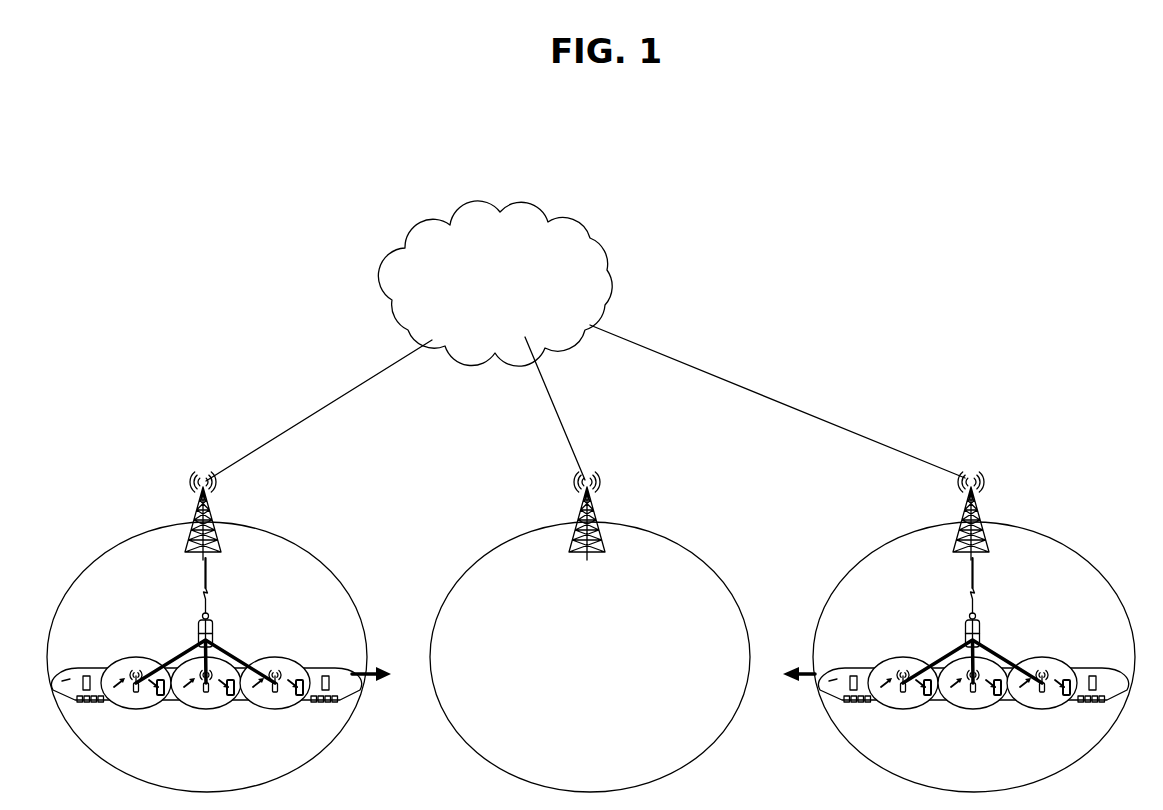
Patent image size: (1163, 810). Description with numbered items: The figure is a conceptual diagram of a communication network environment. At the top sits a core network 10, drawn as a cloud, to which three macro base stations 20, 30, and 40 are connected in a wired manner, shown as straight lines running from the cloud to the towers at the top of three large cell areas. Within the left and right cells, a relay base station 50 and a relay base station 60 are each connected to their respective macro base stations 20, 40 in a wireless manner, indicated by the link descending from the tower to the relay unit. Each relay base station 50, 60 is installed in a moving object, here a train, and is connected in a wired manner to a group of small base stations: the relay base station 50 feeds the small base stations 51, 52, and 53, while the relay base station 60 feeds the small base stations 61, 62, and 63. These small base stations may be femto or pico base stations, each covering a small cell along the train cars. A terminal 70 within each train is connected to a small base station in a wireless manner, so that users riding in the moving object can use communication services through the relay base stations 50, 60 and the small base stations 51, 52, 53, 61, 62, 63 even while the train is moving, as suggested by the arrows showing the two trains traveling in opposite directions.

The core network 10 is at (497, 208).
The macro base station 20 is at (199, 497).
The macro base station 30 is at (583, 498).
The macro base station 40 is at (976, 498).
The relay base station 50 is at (198, 624).
The small base station 51 is at (136, 694).
The small base station 52 is at (206, 694).
The small base station 53 is at (275, 694).
The relay base station 60 is at (984, 626).
The small base station 61 is at (903, 694).
The small base station 62 is at (973, 694).
The small base station 63 is at (1042, 694).
The terminal 70 is at (164, 697).